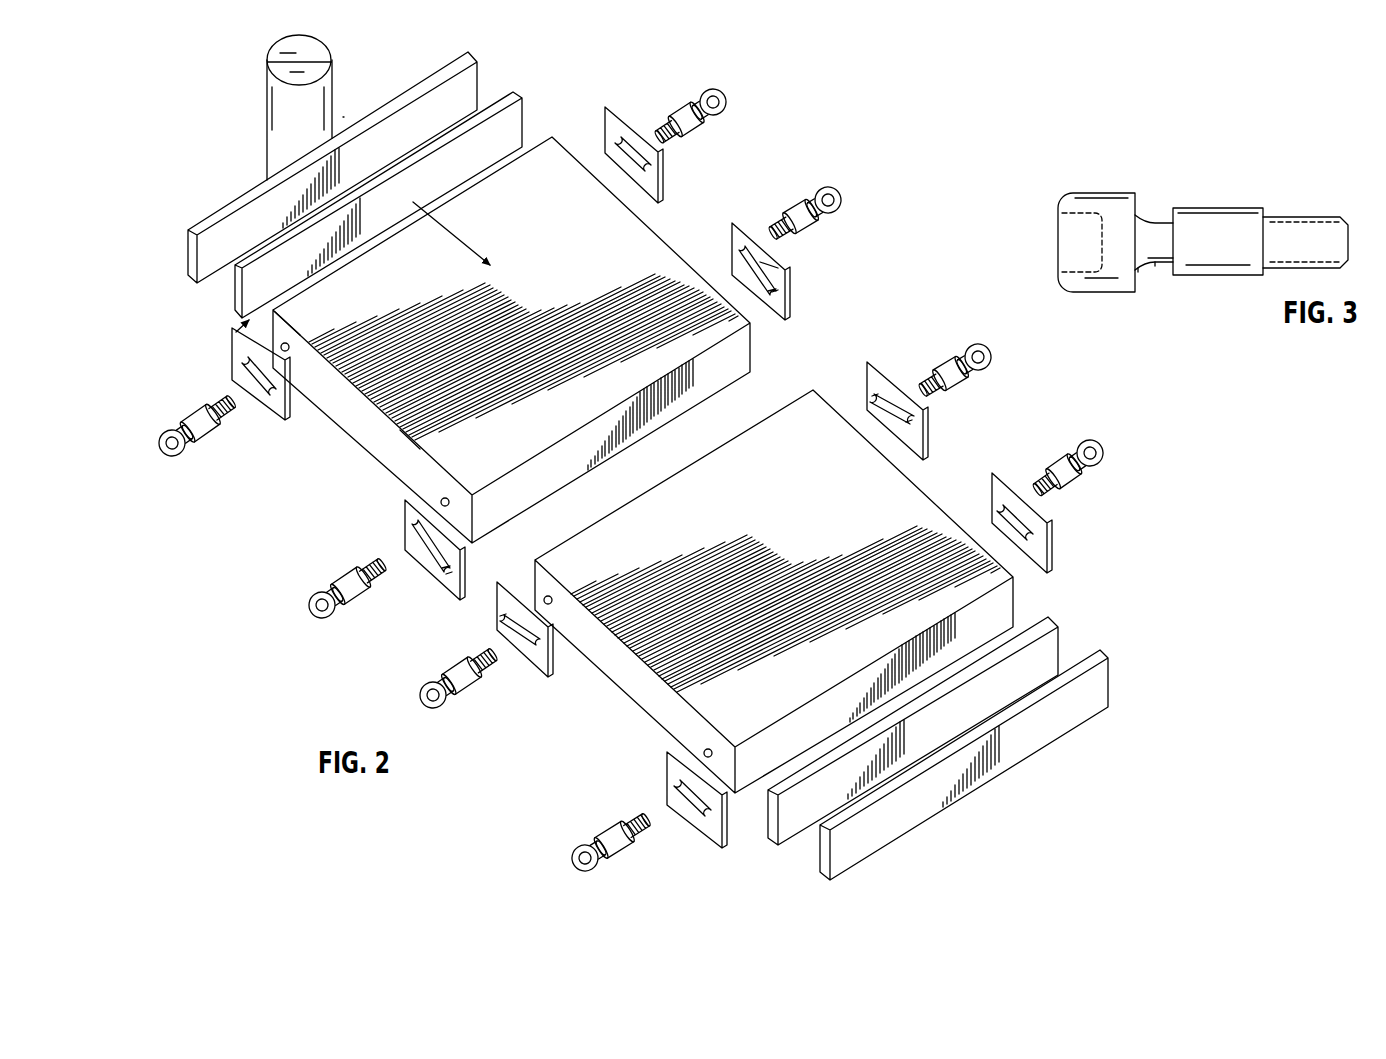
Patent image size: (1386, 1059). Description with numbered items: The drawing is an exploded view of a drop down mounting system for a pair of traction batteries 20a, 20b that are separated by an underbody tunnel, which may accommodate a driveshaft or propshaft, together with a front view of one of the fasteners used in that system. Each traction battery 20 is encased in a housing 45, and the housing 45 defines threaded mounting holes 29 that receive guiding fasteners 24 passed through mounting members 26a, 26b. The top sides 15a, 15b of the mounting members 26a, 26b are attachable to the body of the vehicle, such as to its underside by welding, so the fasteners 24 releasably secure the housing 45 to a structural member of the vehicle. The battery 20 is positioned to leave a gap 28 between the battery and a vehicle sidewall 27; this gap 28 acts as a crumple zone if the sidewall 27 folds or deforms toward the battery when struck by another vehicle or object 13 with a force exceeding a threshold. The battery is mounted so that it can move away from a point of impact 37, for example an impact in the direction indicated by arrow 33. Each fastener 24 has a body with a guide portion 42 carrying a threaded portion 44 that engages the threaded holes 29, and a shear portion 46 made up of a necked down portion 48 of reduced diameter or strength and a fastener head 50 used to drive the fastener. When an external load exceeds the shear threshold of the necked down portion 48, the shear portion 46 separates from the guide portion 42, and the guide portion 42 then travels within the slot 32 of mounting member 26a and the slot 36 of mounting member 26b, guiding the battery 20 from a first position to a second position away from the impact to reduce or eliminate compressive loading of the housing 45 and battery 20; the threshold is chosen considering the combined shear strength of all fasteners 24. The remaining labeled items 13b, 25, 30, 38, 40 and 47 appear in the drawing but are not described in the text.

In FIG. 2, the object 13 is at (333, 131).
In FIG. 2, the second tool portion 13b is at (781, 262).
In FIG. 2, the top side of mounting member 15a is at (287, 362).
In FIG. 2, the top side of mounting member 15b is at (412, 488).
In FIG. 2, the traction battery 20 is at (537, 490).
In FIG. 2, the traction battery 20a is at (578, 452).
In FIG. 2, the traction battery 20b is at (743, 790).
In FIG. 2, the guiding fastener 24 is at (746, 97).
In FIG. 3, the guiding fastener 24 is at (1262, 148).
In FIG. 2, the bar 25 is at (1053, 645).
In FIG. 2, the mounting member 26a is at (665, 180).
In FIG. 2, the mounting member 26b is at (797, 292).
In FIG. 2, the vehicle sidewall 27 is at (517, 113).
In FIG. 2, the gap 28 is at (230, 330).
In FIG. 2, the mounting hole 29 is at (291, 344).
In FIG. 2, the bar 30 is at (227, 210).
In FIG. 2, the slot 32 is at (607, 143).
In FIG. 2, the arrow 33 is at (478, 243).
In FIG. 2, the slot 36 is at (748, 240).
In FIG. 2, the point of impact 37 is at (344, 116).
In FIG. 2, the slot end portion 38 is at (764, 296).
In FIG. 2, the slot end portion 40 is at (774, 300).
In FIG. 3, the guide portion 42 is at (1265, 184).
In FIG. 2, the threaded portion 44 is at (697, 130).
In FIG. 3, the threaded portion 44 is at (1330, 206).
In FIG. 2, the housing 45 is at (560, 277).
In FIG. 3, the shear portion 46 is at (1160, 270).
In FIG. 3, the neck groove 47 is at (1154, 296).
In FIG. 2, the necked down portion 48 is at (720, 113).
In FIG. 3, the necked down portion 48 is at (1164, 214).
In FIG. 2, the fastener head 50 is at (712, 89).
In FIG. 3, the fastener head 50 is at (1113, 186).